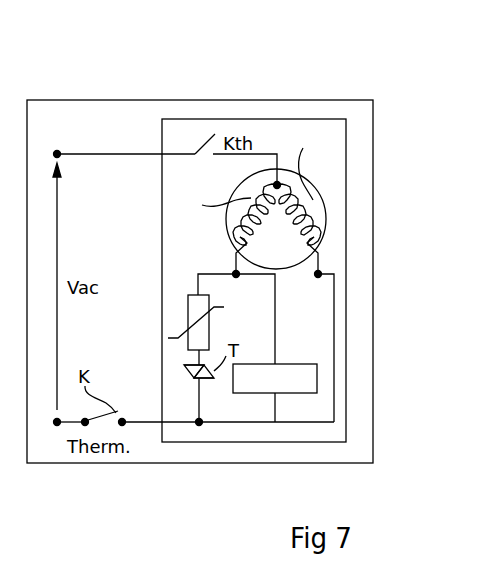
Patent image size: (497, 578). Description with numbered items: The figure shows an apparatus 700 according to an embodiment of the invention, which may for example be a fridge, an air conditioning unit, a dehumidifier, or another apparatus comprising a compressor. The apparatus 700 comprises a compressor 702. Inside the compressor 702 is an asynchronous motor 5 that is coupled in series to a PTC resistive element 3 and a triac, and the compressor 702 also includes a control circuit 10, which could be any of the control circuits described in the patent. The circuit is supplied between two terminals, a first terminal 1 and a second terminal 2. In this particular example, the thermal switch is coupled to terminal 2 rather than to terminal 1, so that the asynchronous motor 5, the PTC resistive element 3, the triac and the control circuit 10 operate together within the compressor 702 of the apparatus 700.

The apparatus 700 is at (255, 100).
The compressor 702 is at (346, 148).
The asynchronous motor 5 is at (326, 213).
The PTC resistive element 3 is at (214, 322).
The control circuit 10 is at (297, 367).
The terminal 1 is at (117, 155).
The terminal 2 is at (62, 423).